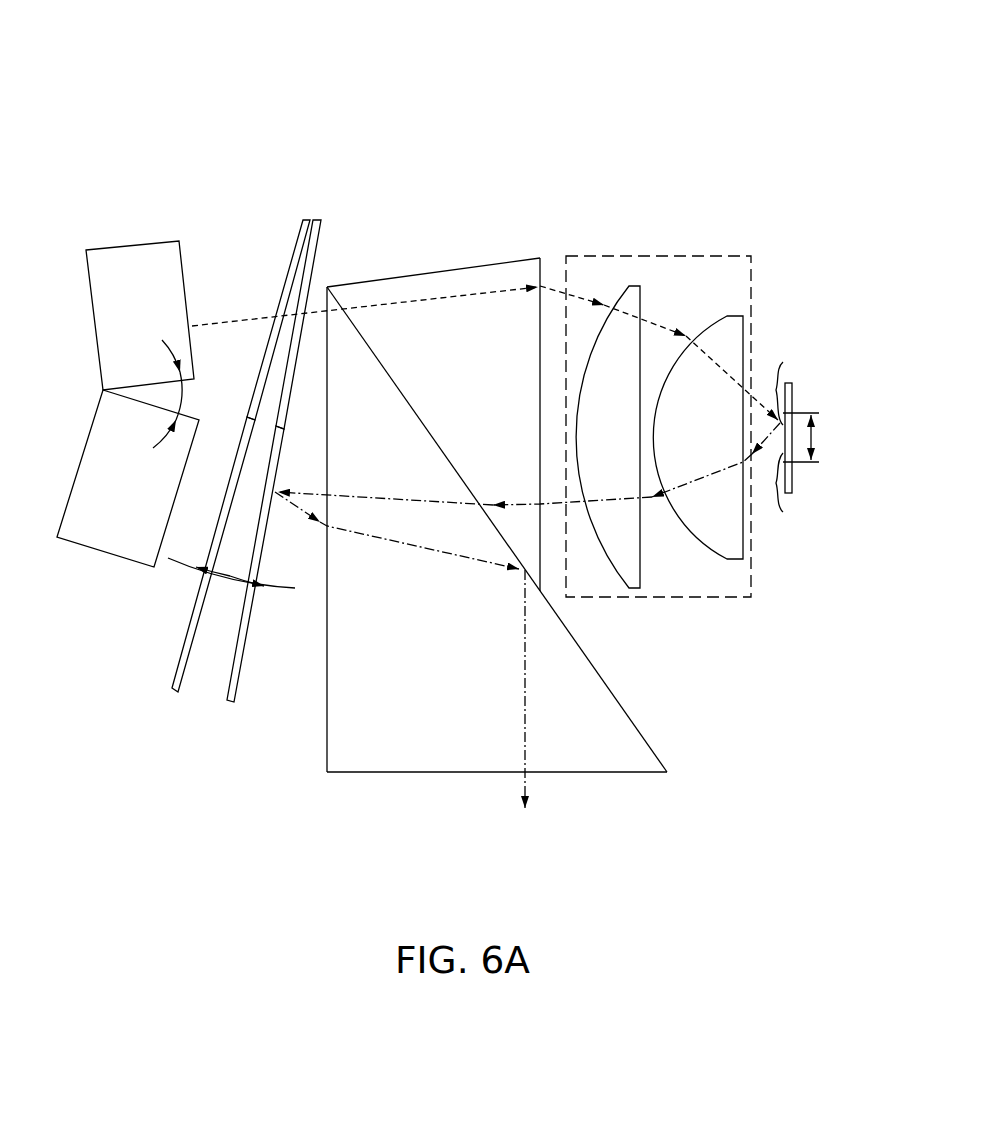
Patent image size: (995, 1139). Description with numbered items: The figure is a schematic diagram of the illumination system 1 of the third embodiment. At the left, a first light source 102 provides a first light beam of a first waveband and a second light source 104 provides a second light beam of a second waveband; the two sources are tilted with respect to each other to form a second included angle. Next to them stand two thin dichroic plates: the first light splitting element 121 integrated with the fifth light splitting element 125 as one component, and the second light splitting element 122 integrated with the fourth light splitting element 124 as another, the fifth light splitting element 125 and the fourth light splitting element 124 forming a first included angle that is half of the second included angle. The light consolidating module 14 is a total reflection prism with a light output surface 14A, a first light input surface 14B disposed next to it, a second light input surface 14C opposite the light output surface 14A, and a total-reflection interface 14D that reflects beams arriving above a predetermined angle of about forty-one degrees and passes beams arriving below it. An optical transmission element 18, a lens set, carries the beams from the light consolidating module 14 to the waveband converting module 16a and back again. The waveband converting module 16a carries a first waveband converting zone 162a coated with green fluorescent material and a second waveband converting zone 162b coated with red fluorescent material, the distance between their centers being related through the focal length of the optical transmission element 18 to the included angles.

The illumination system 1 is at (149, 97).
The first light source 102 is at (94, 322).
The second light source 104 is at (76, 474).
The first light splitting element 121 is at (305, 220).
The fourth light splitting element 124 is at (318, 220).
The fifth light splitting element 125 is at (173, 665).
The second light splitting element 122 is at (242, 672).
The light consolidating module 14 is at (484, 502).
The light output surface 14A is at (388, 772).
The first light input surface 14B is at (328, 760).
The second light input surface 14C is at (382, 279).
The total-reflection interface 14D is at (632, 720).
The optical transmission element 18 is at (632, 256).
The waveband converting module 16a is at (798, 380).
The first waveband converting zone 162a is at (784, 381).
The second waveband converting zone 162b is at (794, 496).